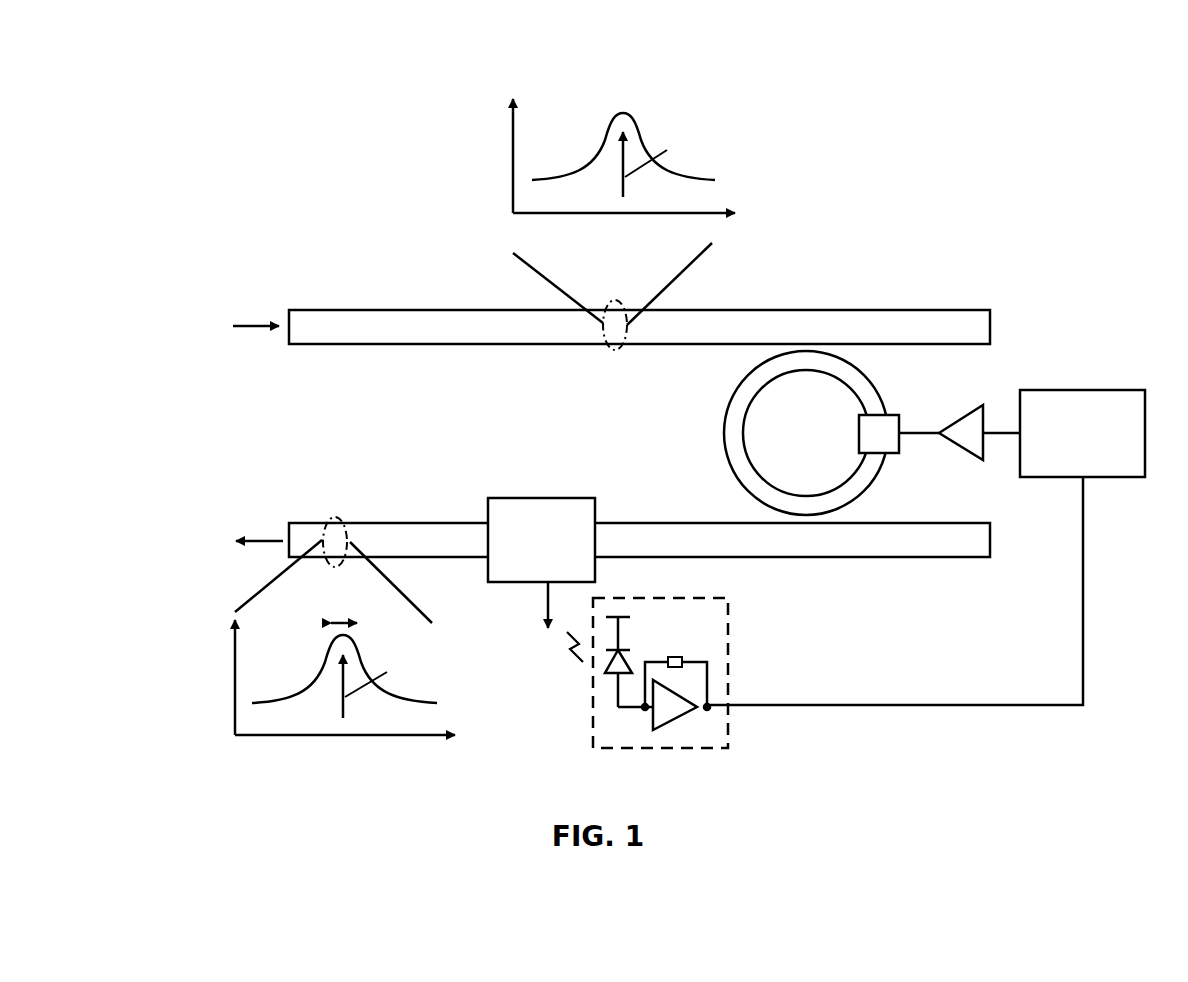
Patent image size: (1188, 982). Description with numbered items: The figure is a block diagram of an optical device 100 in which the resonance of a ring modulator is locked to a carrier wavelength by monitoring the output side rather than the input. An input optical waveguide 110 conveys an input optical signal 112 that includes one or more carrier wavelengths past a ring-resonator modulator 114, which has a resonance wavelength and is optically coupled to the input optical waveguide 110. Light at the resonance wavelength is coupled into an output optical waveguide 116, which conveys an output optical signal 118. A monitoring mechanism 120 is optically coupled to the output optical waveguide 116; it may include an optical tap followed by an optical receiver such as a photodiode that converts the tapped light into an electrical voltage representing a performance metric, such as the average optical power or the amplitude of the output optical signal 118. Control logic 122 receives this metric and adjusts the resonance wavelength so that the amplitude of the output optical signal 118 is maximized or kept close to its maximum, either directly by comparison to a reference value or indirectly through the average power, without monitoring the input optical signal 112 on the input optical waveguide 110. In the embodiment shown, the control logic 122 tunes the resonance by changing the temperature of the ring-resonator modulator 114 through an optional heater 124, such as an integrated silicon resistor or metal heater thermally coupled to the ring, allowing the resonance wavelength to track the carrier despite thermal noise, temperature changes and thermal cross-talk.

The optical device 100 is at (1013, 115).
The input optical waveguide 110 is at (433, 327).
The input optical signal 112 is at (258, 323).
The ring-resonator modulator 114 is at (740, 460).
The output optical waveguide 116 is at (448, 540).
The output optical signal 118 is at (267, 535).
The monitoring mechanism 120 is at (728, 733).
The control logic 122 is at (926, 547).
The heater 124 is at (883, 438).